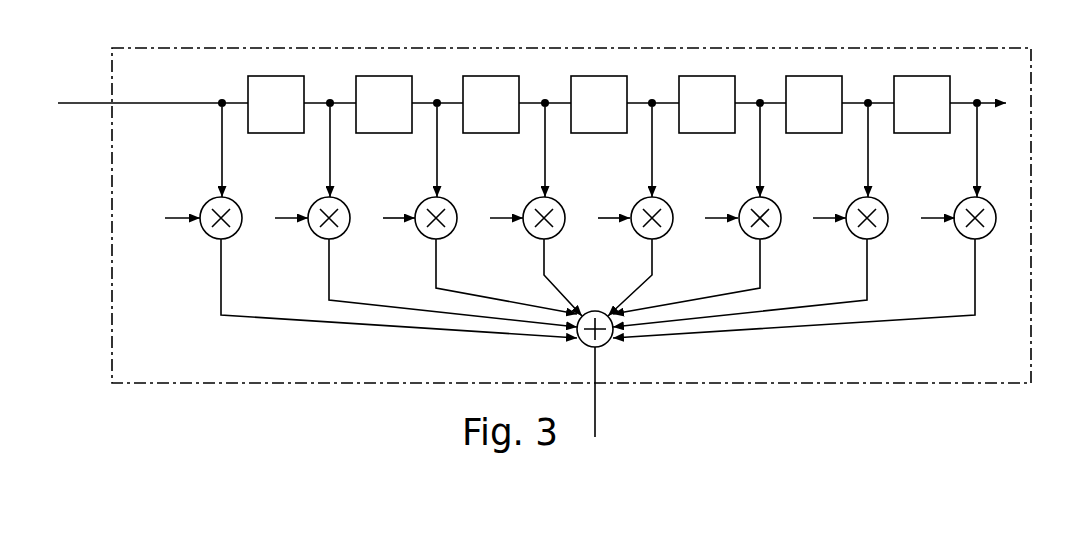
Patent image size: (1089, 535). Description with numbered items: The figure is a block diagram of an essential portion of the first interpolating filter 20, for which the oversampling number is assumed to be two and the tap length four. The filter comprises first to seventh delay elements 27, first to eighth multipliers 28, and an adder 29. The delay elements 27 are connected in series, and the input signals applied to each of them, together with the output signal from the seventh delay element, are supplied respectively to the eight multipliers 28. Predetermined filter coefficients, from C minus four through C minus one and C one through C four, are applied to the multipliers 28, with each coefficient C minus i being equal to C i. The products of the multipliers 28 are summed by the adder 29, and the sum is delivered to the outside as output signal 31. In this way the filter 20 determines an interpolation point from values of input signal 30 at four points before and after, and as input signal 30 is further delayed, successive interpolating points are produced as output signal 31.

The first interpolating filter 20 is at (1003, 47).
The delay elements 27 is at (278, 76).
The multipliers 28 is at (234, 201).
The adder 29 is at (597, 310).
The input signal 30 is at (83, 103).
The output signal 31 is at (596, 414).